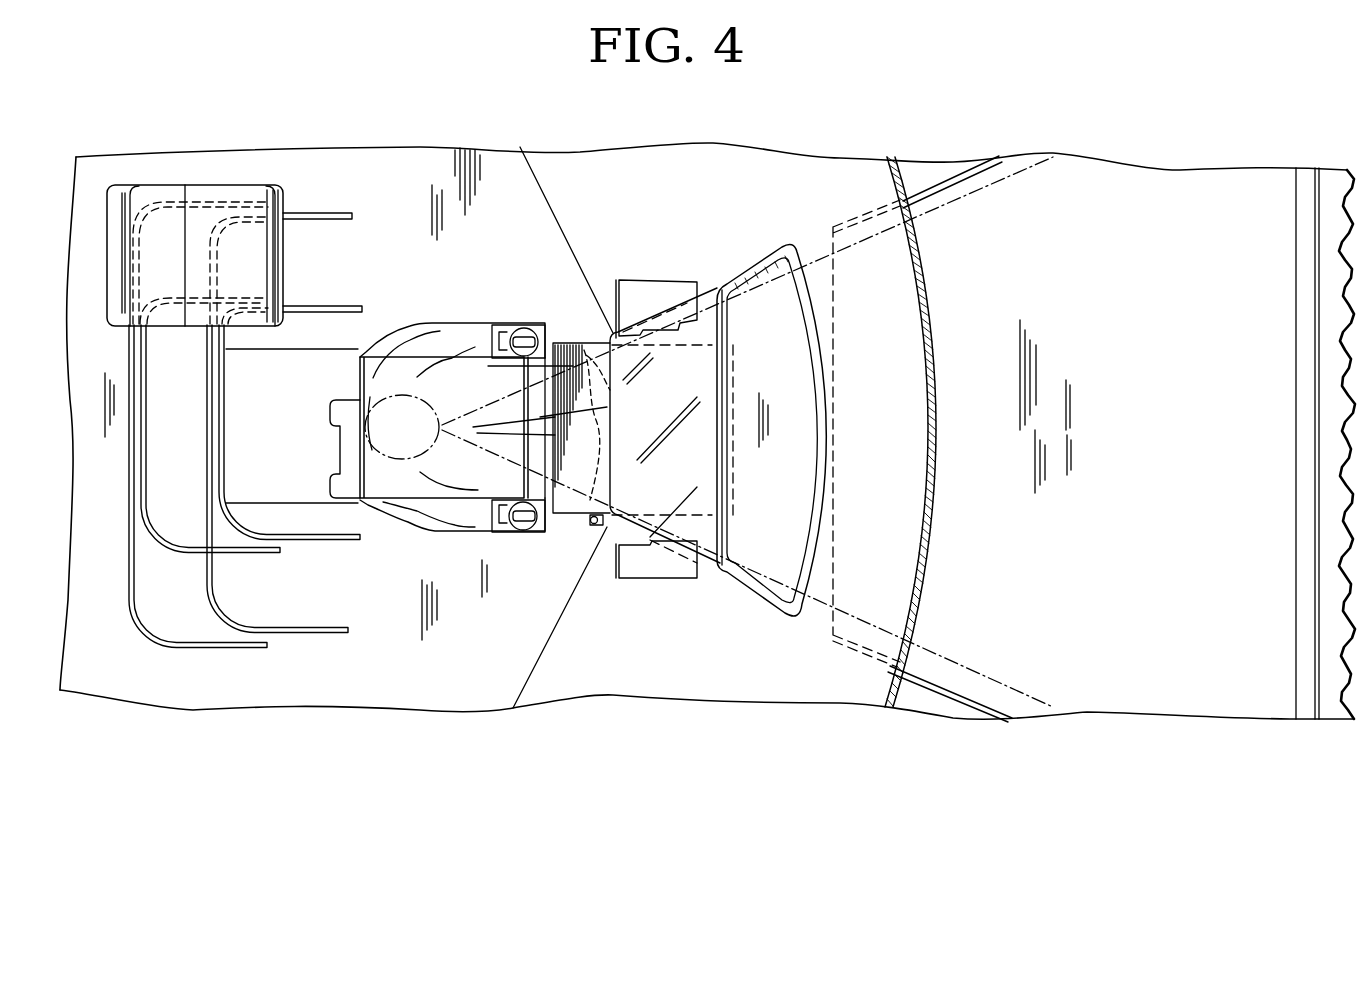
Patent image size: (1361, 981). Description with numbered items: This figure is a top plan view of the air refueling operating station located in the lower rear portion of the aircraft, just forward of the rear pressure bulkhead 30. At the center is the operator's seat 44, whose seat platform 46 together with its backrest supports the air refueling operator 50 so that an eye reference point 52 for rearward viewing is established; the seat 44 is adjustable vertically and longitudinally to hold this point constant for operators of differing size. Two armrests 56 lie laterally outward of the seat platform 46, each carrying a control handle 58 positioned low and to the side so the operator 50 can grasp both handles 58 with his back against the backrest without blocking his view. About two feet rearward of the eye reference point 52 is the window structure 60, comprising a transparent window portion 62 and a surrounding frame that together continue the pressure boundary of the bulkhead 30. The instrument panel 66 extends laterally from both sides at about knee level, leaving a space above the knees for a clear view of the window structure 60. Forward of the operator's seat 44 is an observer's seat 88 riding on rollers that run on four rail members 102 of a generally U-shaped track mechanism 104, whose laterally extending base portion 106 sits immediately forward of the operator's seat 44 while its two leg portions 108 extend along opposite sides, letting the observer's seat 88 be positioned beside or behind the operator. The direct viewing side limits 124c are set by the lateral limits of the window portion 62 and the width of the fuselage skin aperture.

The rear pressure bulkhead 30 is at (923, 285).
The operator's seat 44 is at (372, 378).
The seat platform 46 is at (333, 423).
The air refueling operator 50 is at (460, 378).
The eye reference point 52 is at (442, 426).
The armrests 56 is at (447, 332).
The control handles 58 is at (528, 333).
The window structure 60 is at (707, 402).
The transparent window portion 62 is at (676, 481).
The instrument panel 66 is at (648, 287).
The observer's seat 88 is at (197, 190).
The rail members 102 is at (219, 473).
The track mechanism 104 is at (124, 551).
The base portion 106 is at (128, 518).
The leg portions 108 is at (329, 204).
The direct viewing side limits 124c is at (993, 183).